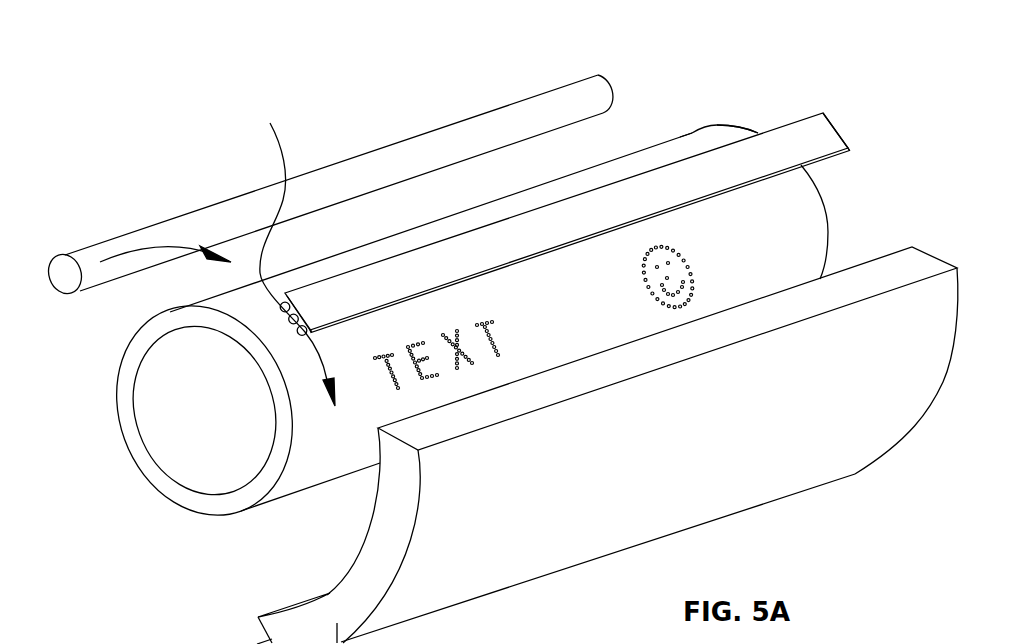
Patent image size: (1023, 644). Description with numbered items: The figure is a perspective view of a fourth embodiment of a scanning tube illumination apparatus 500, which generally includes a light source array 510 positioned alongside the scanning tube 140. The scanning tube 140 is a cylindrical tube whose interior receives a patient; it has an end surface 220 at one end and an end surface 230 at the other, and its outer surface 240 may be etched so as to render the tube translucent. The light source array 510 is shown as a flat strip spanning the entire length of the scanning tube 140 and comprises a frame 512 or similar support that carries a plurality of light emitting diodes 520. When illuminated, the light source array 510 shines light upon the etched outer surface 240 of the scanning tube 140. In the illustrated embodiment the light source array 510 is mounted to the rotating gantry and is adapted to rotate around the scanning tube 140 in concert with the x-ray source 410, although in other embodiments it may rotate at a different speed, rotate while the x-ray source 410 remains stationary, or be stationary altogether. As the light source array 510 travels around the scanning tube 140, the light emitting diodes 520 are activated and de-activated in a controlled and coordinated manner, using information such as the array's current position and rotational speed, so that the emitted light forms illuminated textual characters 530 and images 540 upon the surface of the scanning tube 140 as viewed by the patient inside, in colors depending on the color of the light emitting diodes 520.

The scanning tube 140 is at (735, 137).
The end surface 220 is at (165, 483).
The end surface 230 is at (830, 217).
The outer surface 240 is at (689, 148).
The x-ray source 410 is at (112, 239).
The scanning tube illumination apparatus 500 is at (678, 100).
The light source array 510 is at (845, 98).
The frame 512 is at (848, 133).
The light emitting diodes 520 is at (294, 251).
The textual characters 530 is at (481, 325).
The images 540 is at (693, 283).